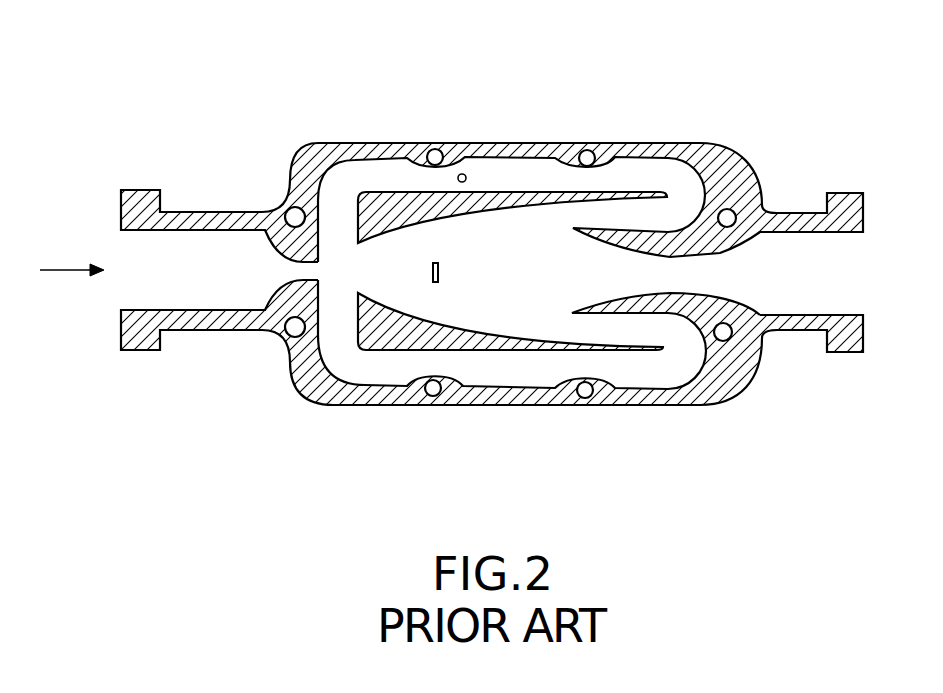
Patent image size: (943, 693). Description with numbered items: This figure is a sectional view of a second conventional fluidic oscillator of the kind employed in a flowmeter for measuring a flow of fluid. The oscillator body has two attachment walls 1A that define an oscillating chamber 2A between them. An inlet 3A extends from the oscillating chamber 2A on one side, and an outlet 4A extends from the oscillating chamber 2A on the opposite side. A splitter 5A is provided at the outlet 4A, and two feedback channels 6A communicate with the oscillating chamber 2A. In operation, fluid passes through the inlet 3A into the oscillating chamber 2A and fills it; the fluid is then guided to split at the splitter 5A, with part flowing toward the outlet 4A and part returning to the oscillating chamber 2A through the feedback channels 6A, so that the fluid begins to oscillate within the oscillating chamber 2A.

The attachment walls 1A is at (525, 192).
The oscillating chamber 2A is at (367, 267).
The inlet 3A is at (273, 272).
The outlet 4A is at (791, 285).
The splitter 5A is at (443, 267).
The feedback channels 6A is at (337, 200).